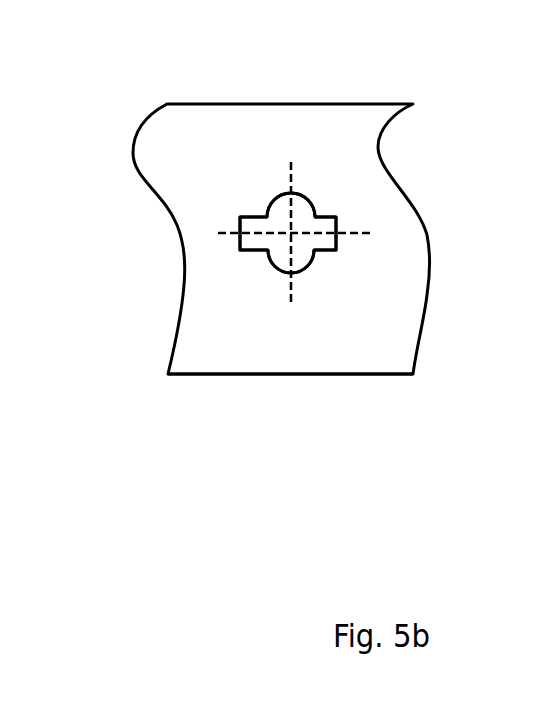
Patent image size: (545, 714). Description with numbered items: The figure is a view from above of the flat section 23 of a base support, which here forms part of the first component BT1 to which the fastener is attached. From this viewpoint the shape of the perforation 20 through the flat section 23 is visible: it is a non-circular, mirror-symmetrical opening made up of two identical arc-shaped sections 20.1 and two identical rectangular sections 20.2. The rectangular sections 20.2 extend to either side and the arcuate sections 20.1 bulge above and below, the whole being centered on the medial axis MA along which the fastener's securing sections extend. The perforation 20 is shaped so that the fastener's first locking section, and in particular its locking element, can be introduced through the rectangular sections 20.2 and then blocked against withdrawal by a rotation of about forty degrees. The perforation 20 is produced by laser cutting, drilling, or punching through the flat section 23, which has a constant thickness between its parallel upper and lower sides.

The first component BT1 is at (177, 350).
The flat section 23 is at (293, 333).
The medial axis MA is at (293, 235).
The perforation 20 is at (258, 268).
The arcuate sections 20.1 is at (295, 195).
The rectangular sections 20.2 is at (337, 222).